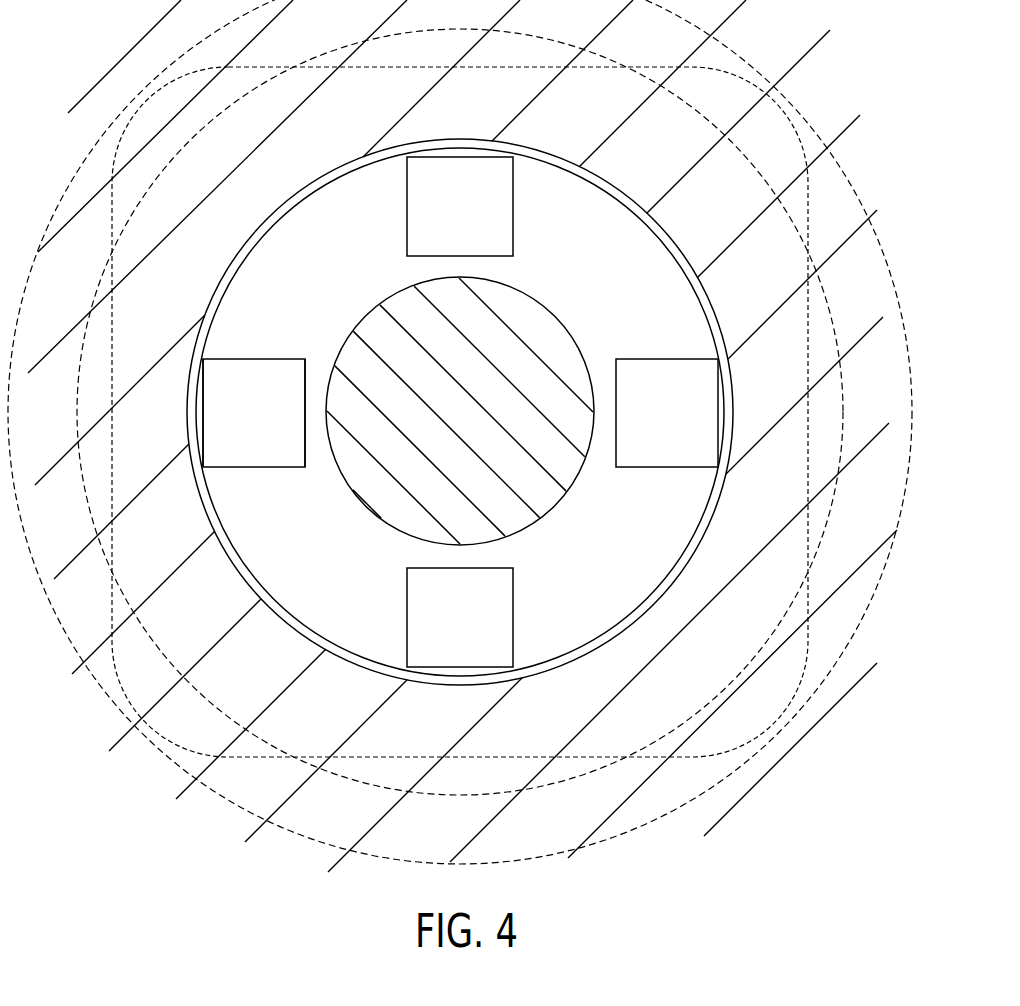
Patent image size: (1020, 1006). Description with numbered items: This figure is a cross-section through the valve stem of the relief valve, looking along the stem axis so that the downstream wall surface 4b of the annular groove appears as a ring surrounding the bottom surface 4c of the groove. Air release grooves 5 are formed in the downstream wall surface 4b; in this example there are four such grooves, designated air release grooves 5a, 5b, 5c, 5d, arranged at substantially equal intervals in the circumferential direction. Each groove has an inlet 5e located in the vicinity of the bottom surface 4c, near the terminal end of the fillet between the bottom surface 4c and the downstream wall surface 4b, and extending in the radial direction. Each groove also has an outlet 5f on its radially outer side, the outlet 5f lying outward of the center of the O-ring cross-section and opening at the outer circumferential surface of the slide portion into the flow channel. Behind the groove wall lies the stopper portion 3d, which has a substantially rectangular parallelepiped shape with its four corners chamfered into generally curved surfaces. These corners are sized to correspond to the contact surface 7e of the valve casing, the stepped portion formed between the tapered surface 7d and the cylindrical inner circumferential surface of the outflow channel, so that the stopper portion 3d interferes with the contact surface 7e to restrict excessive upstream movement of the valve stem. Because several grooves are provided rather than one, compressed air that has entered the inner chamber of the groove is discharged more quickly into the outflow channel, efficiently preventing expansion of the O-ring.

The stopper portion 3d is at (775, 122).
The downstream wall surface 4b is at (359, 250).
The bottom surface 4c is at (553, 503).
The air release grooves 5 is at (460, 412).
The air release groove 5a is at (257, 381).
The air release groove 5b is at (488, 611).
The air release groove 5c is at (640, 378).
The air release groove 5d is at (488, 215).
The inlet 5e is at (289, 418).
The outlet 5f is at (205, 409).
The tapered surface 7d is at (460, 412).
The contact surface 7e is at (460, 432).